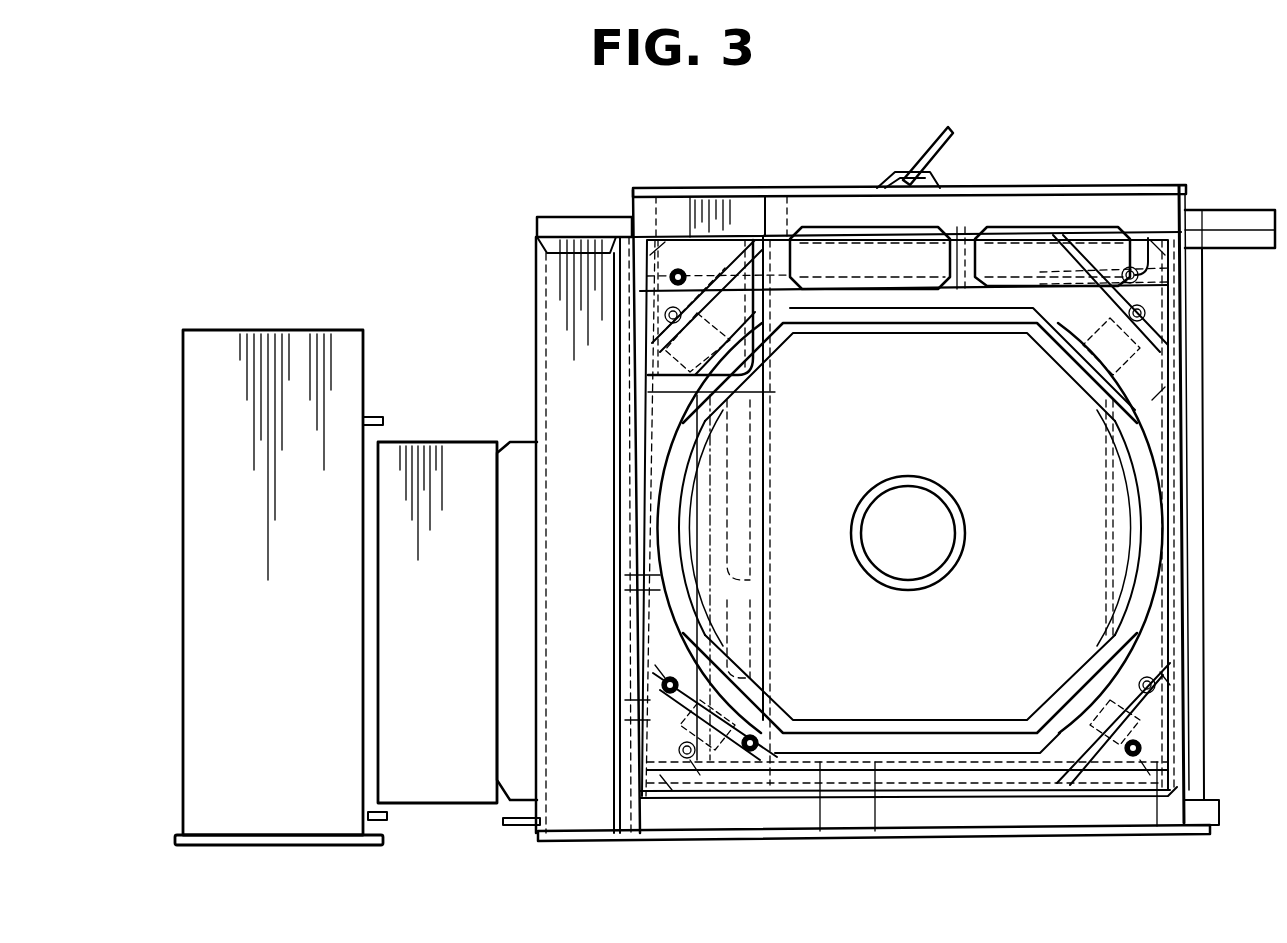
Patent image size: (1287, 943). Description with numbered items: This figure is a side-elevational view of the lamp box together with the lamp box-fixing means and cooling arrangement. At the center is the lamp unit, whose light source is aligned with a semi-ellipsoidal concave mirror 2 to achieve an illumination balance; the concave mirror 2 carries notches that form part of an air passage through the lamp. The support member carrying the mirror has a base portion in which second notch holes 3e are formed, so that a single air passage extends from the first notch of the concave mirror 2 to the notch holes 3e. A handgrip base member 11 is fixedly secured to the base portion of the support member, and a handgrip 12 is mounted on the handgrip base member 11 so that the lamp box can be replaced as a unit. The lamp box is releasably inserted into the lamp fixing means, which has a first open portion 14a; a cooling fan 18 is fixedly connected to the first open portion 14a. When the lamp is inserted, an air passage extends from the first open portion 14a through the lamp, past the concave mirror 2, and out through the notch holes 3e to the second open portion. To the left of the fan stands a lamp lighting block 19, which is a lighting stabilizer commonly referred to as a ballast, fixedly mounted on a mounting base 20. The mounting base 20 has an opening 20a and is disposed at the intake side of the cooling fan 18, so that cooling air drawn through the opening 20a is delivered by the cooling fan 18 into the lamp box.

The concave mirror 2 is at (1068, 602).
The second notch holes 3e is at (846, 253).
The handgrip base member 11 is at (653, 190).
The handgrip 12 is at (927, 152).
The first open portion 14a is at (490, 515).
The cooling fan 18 is at (452, 758).
The lamp lighting block 19 is at (215, 765).
The mounting base 20 is at (258, 848).
The opening 20a is at (395, 818).